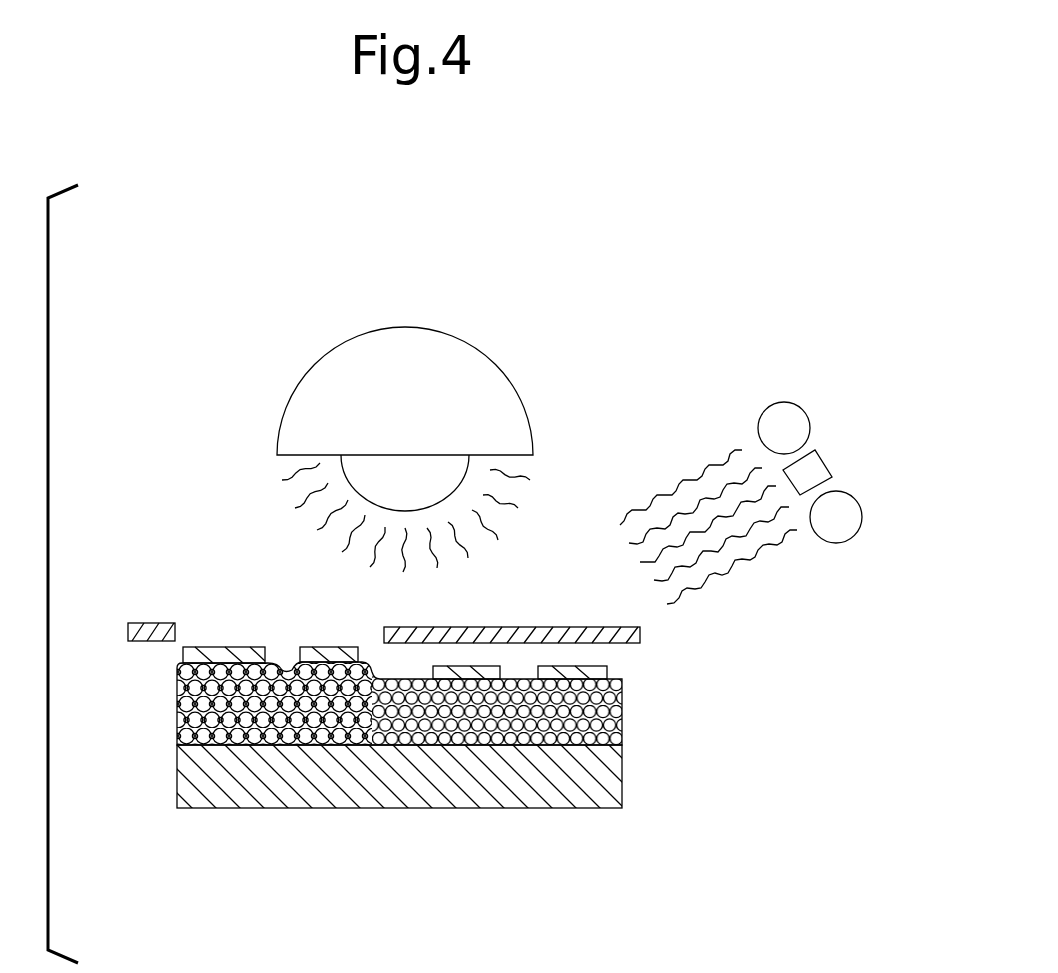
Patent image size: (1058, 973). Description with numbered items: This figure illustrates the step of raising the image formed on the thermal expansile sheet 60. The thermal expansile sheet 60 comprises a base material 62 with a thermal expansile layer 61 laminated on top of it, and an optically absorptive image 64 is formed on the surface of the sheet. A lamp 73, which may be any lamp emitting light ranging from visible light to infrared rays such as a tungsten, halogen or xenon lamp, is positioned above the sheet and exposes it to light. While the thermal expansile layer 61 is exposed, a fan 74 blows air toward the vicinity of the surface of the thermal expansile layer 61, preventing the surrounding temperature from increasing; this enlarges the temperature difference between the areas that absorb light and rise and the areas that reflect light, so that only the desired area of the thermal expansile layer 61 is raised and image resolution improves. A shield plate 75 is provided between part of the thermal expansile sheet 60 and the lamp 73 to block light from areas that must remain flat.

The thermal expansile sheet 60 is at (422, 751).
The thermal expansile layer 61 is at (177, 687).
The base material 62 is at (623, 770).
The optically absorptive image 64 is at (602, 666).
The lamp 73 is at (305, 370).
The fan 74 is at (843, 465).
The shield plate 75 is at (418, 627).